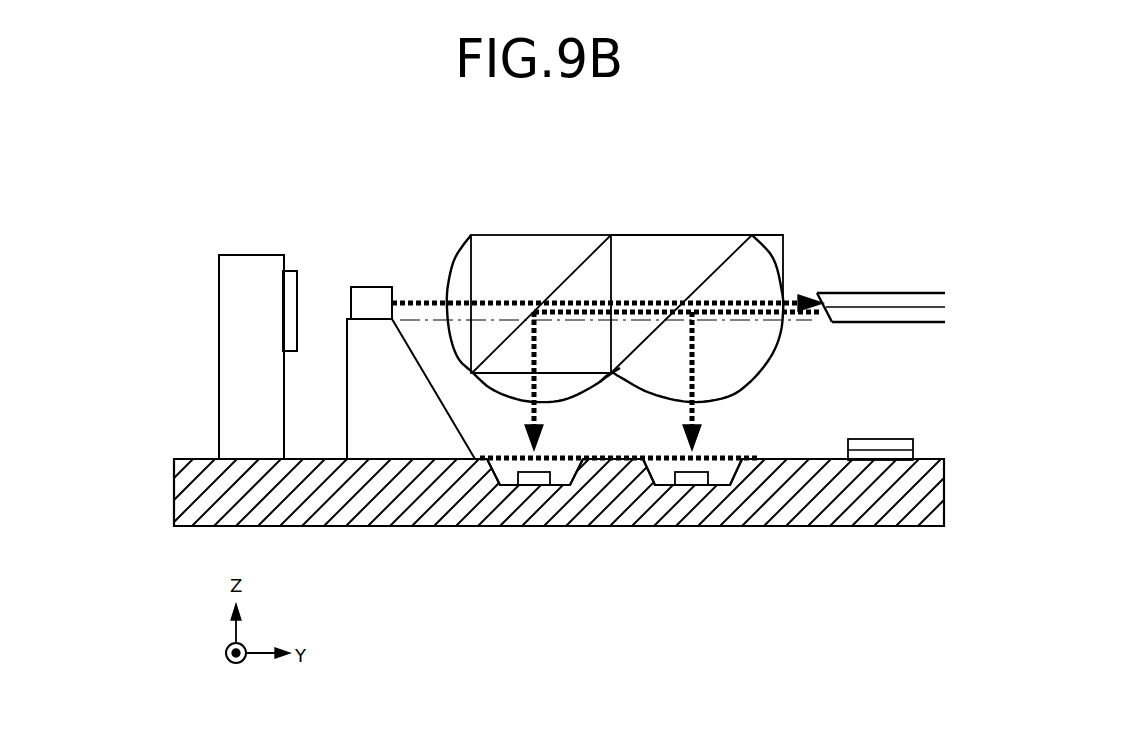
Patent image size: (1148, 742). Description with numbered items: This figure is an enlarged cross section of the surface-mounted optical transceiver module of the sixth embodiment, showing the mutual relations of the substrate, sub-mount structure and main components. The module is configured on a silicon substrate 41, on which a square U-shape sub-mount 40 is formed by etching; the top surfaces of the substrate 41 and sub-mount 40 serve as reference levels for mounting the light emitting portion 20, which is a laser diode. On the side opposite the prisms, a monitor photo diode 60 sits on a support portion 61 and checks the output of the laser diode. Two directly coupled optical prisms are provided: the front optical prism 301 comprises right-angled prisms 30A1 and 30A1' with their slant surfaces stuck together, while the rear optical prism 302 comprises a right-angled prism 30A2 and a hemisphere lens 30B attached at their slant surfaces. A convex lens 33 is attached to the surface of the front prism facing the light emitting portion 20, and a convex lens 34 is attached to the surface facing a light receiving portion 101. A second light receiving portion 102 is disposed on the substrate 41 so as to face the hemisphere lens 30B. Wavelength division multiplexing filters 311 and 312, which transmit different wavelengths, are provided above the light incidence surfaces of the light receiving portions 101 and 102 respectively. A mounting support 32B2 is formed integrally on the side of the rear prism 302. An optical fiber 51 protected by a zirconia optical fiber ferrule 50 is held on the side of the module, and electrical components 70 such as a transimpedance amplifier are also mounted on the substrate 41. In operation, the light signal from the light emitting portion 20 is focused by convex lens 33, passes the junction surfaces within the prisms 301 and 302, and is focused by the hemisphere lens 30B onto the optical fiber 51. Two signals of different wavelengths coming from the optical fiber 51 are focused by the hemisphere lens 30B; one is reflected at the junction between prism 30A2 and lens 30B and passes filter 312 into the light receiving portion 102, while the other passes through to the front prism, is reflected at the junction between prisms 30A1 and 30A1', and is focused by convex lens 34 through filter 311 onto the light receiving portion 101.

The light emitting portion 20 is at (373, 295).
The right-angled prism 30A1 is at (541, 260).
The right-angled prism 30A2 is at (652, 252).
The right-angled prism 30A1' is at (554, 402).
The hemisphere lens 30B is at (737, 358).
The front optical prism 301 is at (587, 220).
The rear optical prism 302 is at (728, 220).
The mounting support 32B2 is at (775, 250).
The convex lens 33 is at (460, 272).
The convex lens 34 is at (510, 387).
The sub-mount 40 is at (405, 443).
The substrate 41 is at (288, 502).
The optical fiber ferrule 50 is at (863, 288).
The optical fiber 51 is at (900, 307).
The monitor photo diode 60 is at (290, 282).
The support portion 61 is at (230, 305).
The electrical components 70 is at (880, 442).
The light receiving portion 101 is at (532, 483).
The light receiving portion 102 is at (692, 483).
The wavelength division multiplexing filter 311 is at (558, 462).
The wavelength division multiplexing filter 312 is at (713, 462).